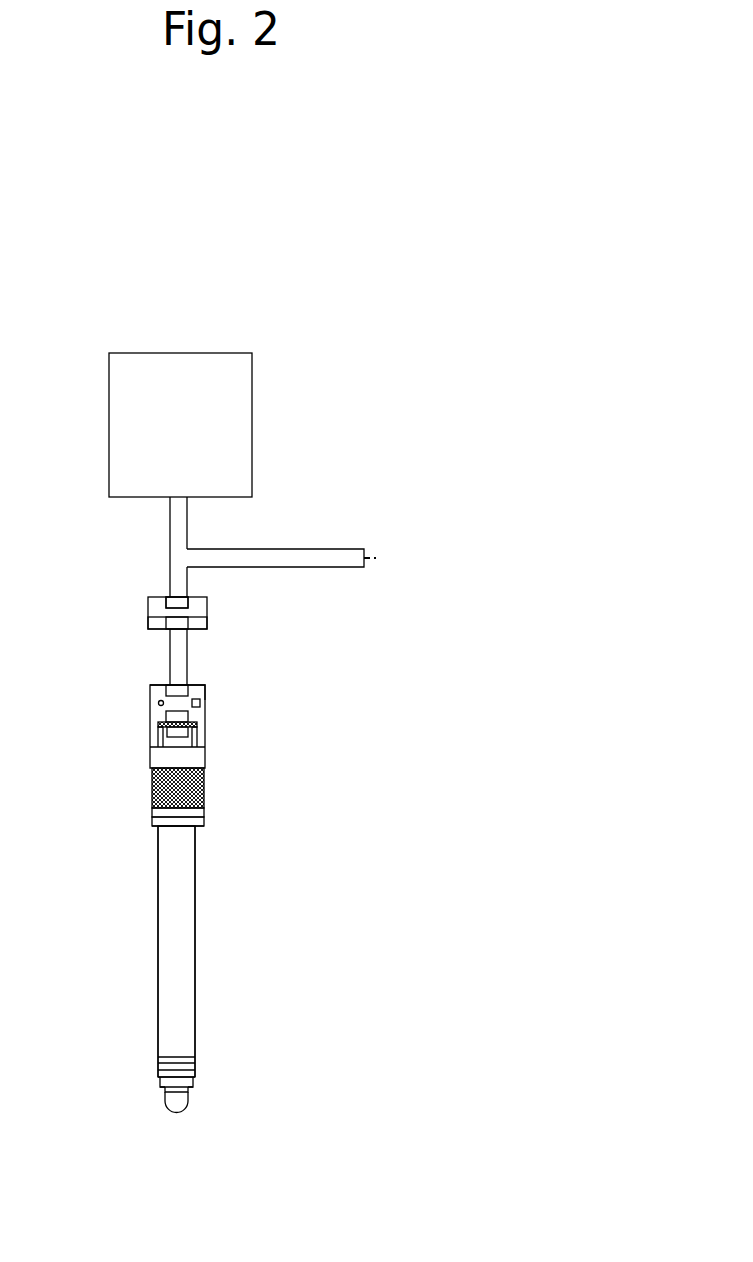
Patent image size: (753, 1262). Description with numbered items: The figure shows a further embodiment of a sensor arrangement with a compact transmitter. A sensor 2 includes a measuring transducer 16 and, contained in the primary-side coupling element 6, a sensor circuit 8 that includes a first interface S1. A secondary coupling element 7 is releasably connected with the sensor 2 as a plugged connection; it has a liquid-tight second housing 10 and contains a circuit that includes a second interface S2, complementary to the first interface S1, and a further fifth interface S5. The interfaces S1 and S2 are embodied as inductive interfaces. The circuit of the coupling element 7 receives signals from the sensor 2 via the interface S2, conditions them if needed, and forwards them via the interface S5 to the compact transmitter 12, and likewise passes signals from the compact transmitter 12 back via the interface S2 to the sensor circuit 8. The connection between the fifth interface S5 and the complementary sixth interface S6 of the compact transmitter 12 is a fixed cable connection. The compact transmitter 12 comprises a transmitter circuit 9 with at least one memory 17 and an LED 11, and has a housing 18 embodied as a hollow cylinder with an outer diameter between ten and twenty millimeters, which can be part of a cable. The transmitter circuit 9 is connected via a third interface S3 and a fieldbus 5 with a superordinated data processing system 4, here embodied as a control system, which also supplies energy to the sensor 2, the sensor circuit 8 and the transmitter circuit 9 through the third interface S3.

The sensor 2 is at (217, 948).
The superordinated data processing system 4 is at (208, 435).
The fieldbus 5 is at (193, 575).
The coupling element 6 is at (192, 762).
The secondary coupling element 7 is at (205, 717).
The sensor circuit 8 is at (203, 755).
The transmitter circuit 9 is at (203, 623).
The second housing 10 is at (202, 690).
The LED 11 is at (155, 705).
The compact transmitter 12 is at (155, 612).
The measuring transducer 16 is at (170, 920).
The memory 17 is at (200, 702).
The housing 18 is at (165, 597).
The first interface S1 is at (152, 738).
The second interface S2 is at (148, 720).
The third interface S3 is at (148, 600).
The fifth interface S5 is at (148, 686).
The sixth interface S6 is at (148, 627).